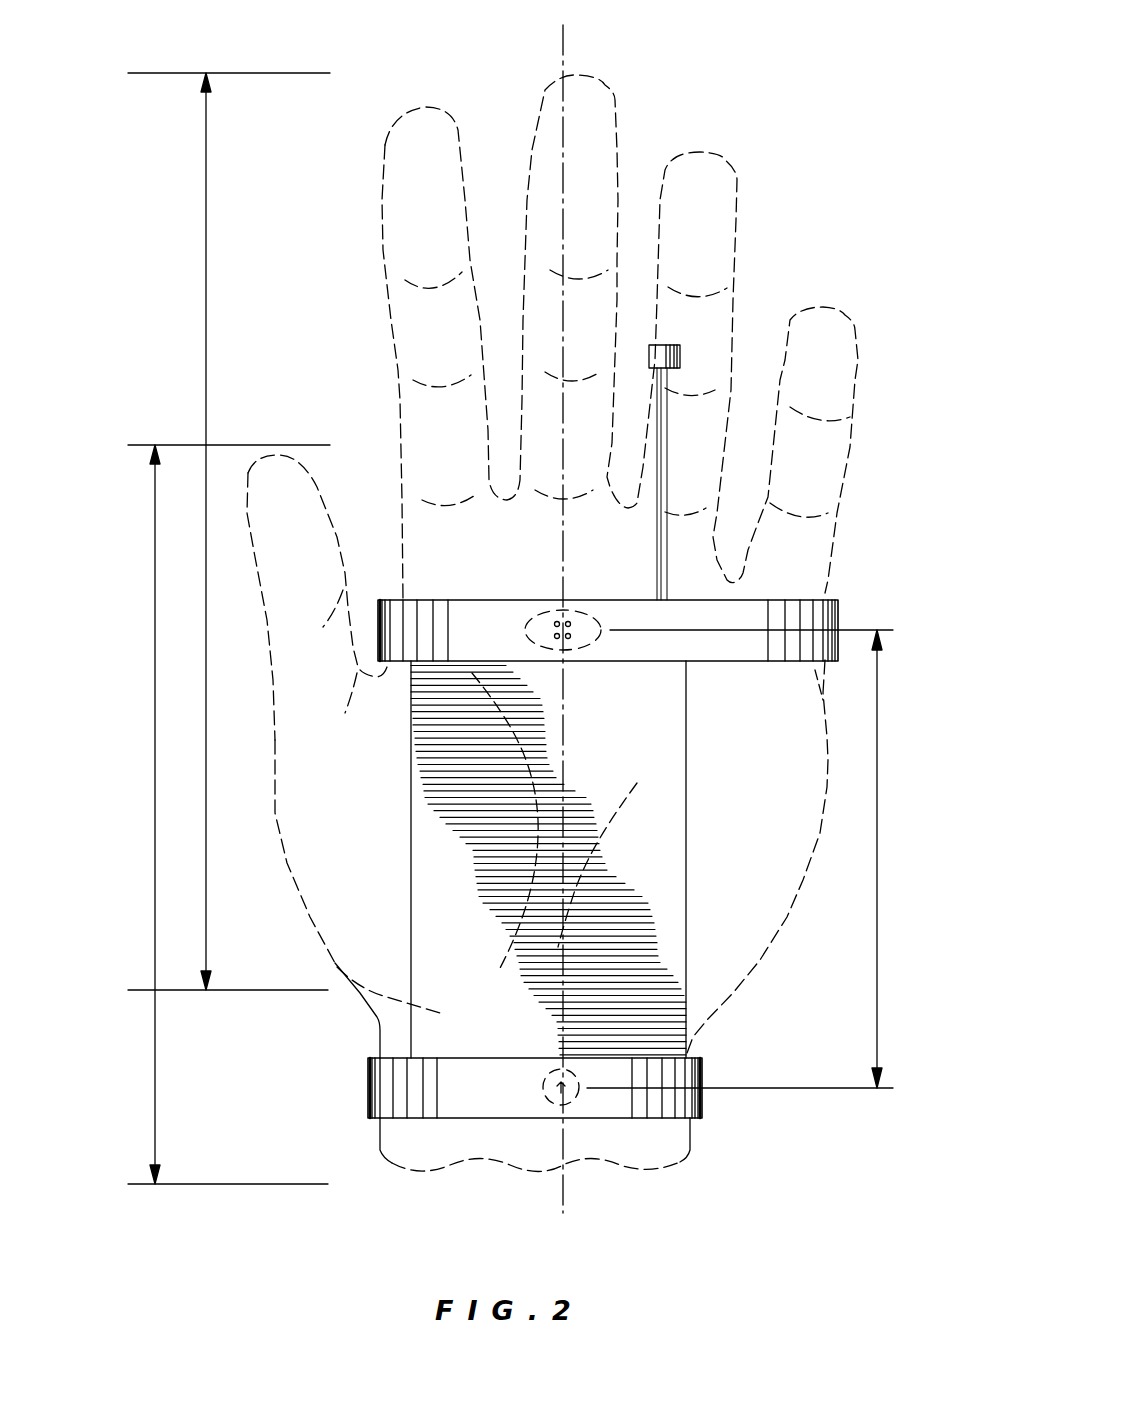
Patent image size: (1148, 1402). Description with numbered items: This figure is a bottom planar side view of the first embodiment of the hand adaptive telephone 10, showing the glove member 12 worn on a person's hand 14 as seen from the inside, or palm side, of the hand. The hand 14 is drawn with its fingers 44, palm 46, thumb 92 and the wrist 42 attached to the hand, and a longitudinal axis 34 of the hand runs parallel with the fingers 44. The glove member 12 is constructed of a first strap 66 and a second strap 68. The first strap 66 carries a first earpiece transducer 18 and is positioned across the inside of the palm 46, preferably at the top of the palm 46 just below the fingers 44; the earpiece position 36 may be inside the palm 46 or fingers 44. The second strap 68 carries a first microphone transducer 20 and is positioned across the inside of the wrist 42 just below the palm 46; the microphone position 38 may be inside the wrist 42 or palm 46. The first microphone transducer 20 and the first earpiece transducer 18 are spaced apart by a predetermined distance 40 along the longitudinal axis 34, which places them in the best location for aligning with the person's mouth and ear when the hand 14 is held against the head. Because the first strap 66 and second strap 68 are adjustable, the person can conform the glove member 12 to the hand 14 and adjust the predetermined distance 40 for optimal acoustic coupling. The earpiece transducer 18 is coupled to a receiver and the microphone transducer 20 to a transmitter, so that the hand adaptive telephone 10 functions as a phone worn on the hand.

The hand adaptive telephone 10 is at (877, 1242).
The glove member 12 is at (365, 1025).
The hand 14 is at (315, 858).
The first earpiece transducer 18 is at (541, 624).
The first microphone transducer 20 is at (552, 1093).
The longitudinal axis 34 is at (566, 35).
The earpiece position 36 is at (207, 242).
The microphone position 38 is at (156, 1084).
The predetermined distance 40 is at (878, 858).
The wrist 42 is at (676, 1143).
The fingers 44 is at (722, 226).
The palm 46 is at (763, 926).
The first strap 66 is at (834, 611).
The second strap 68 is at (702, 1071).
The thumb 92 is at (303, 497).